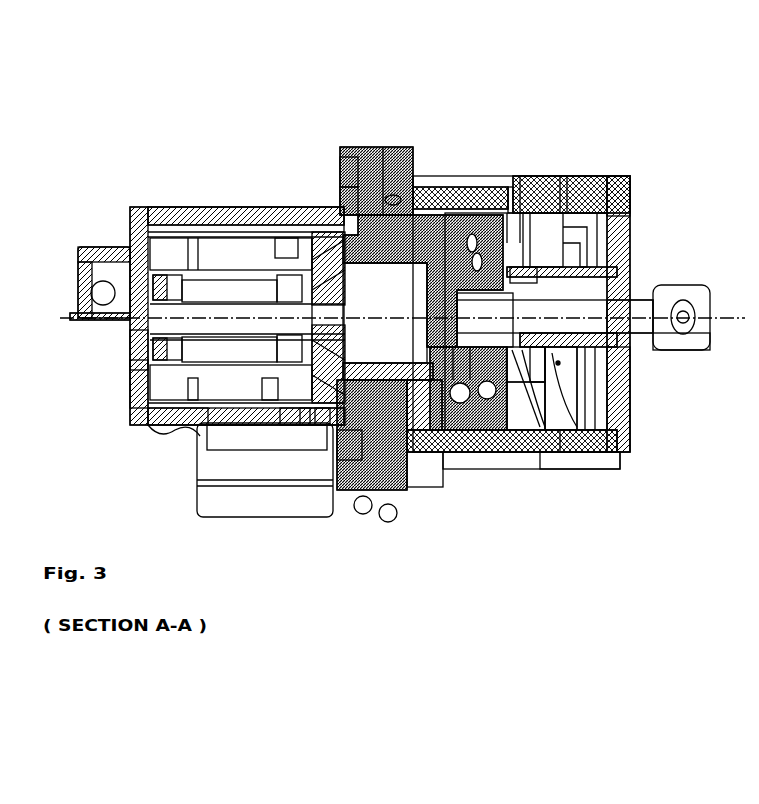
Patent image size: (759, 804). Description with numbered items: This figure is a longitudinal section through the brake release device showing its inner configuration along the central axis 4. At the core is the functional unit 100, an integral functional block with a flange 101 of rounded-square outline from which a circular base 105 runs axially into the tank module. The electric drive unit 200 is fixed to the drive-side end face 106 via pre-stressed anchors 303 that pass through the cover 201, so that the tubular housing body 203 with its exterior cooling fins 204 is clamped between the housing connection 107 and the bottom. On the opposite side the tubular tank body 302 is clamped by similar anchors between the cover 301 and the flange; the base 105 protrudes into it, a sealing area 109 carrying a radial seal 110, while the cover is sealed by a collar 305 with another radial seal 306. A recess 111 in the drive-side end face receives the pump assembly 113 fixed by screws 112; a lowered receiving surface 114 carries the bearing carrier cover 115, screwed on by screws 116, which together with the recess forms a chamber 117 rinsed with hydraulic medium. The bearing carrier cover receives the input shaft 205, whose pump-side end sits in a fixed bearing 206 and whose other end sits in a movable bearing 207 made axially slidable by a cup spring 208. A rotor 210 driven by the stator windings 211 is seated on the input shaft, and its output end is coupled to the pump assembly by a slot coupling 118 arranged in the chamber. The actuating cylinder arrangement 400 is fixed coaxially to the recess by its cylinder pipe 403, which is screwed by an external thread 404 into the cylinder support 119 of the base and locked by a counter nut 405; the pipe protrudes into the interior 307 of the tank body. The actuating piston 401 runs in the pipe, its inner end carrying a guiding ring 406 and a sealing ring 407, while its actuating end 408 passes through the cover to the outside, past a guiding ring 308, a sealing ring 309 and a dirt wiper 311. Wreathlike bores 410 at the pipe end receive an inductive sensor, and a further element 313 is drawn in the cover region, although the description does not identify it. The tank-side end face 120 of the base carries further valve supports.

The central axis 4 is at (83, 330).
The functional unit 100 is at (360, 136).
The flange 101 is at (343, 157).
The base 105 is at (493, 178).
The drive-side end face 106 is at (340, 187).
The housing connection 107 is at (366, 215).
The sealing area 109 is at (425, 460).
The radial seal 110 is at (547, 476).
The recess 111 is at (390, 460).
The screws 112 is at (372, 460).
The pump assembly 113 is at (400, 314).
The receiving surface 114 is at (410, 178).
The bearing carrier cover 115 is at (337, 430).
The screws 116 is at (345, 440).
The chamber 117 is at (322, 430).
The slot coupling 118 is at (300, 430).
The cylinder support 119 is at (537, 364).
The tank-side end face 120 is at (540, 466).
The electric drive unit 200 is at (121, 186).
The cover 201 is at (136, 392).
The housing body 203 is at (160, 222).
The cooling fins 204 is at (160, 430).
The input shaft 205 is at (205, 430).
The fixed bearing 206 is at (272, 440).
The movable bearing 207 is at (130, 245).
The cup spring 208 is at (136, 358).
The rotor 210 is at (203, 280).
The stator windings 211 is at (226, 247).
The cover 301 is at (648, 197).
The tank body 302 is at (547, 177).
The pre-stressed anchors 303 is at (143, 437).
The collar 305 is at (617, 177).
The radial seal 306 is at (610, 177).
The interior 307 is at (523, 177).
The guiding ring 308 is at (640, 300).
The sealing ring 309 is at (633, 355).
The dirt wiper 311 is at (703, 289).
The piston guide 313 is at (610, 382).
The actuating cylinder arrangement 400 is at (623, 413).
The actuating piston 401 is at (565, 315).
The cylinder pipe 403 is at (630, 445).
The external thread 404 is at (520, 460).
The counter nut 405 is at (552, 462).
The guiding ring 406 is at (445, 470).
The sealing ring 407 is at (505, 400).
The actuating end 408 is at (620, 305).
The wreathlike bores 410 is at (597, 452).